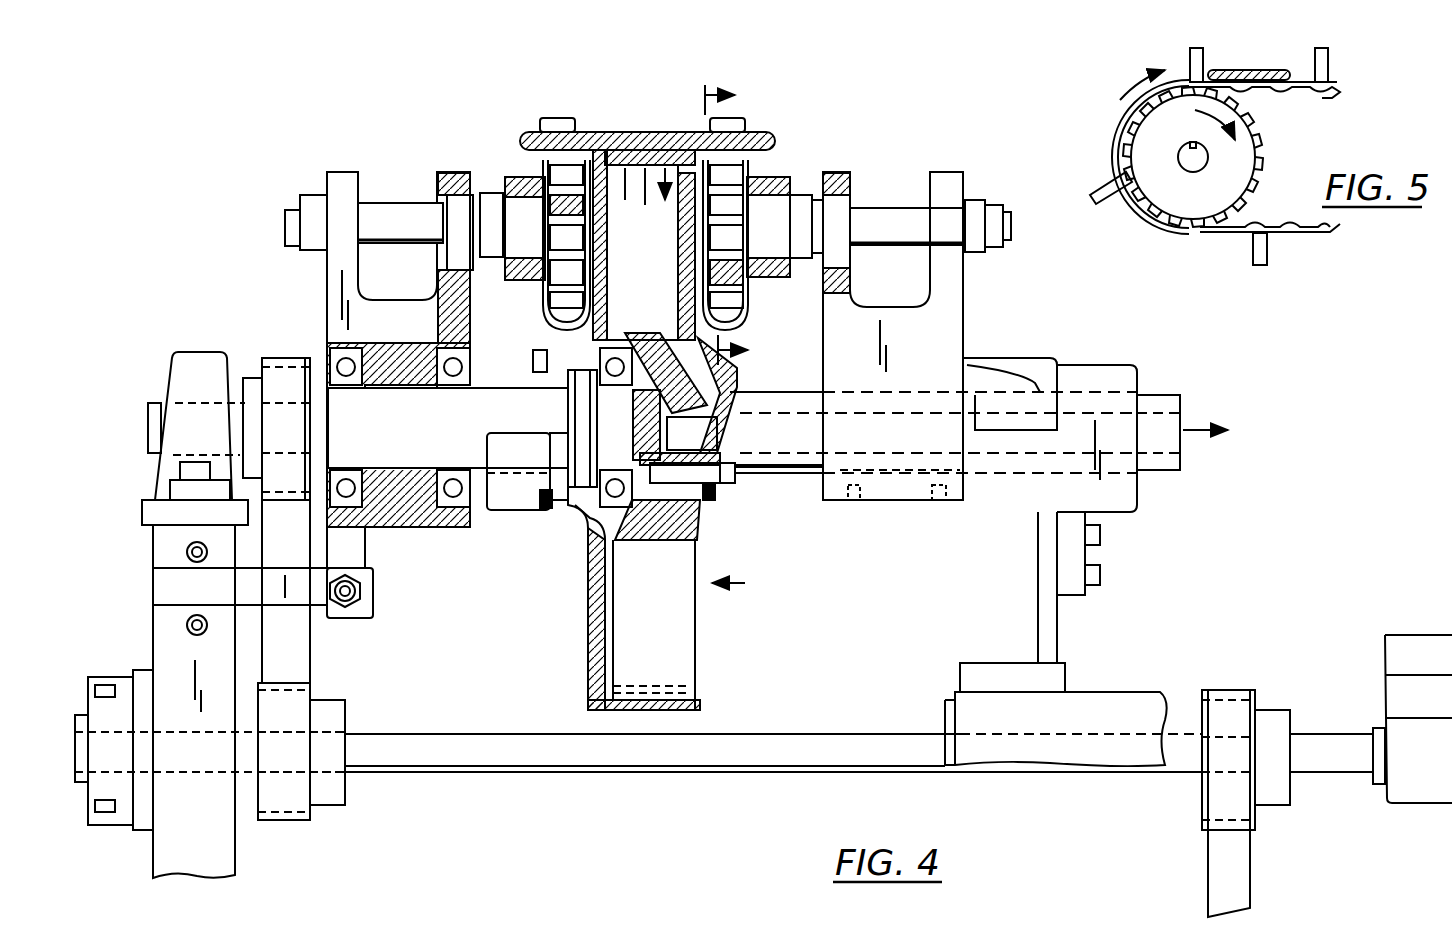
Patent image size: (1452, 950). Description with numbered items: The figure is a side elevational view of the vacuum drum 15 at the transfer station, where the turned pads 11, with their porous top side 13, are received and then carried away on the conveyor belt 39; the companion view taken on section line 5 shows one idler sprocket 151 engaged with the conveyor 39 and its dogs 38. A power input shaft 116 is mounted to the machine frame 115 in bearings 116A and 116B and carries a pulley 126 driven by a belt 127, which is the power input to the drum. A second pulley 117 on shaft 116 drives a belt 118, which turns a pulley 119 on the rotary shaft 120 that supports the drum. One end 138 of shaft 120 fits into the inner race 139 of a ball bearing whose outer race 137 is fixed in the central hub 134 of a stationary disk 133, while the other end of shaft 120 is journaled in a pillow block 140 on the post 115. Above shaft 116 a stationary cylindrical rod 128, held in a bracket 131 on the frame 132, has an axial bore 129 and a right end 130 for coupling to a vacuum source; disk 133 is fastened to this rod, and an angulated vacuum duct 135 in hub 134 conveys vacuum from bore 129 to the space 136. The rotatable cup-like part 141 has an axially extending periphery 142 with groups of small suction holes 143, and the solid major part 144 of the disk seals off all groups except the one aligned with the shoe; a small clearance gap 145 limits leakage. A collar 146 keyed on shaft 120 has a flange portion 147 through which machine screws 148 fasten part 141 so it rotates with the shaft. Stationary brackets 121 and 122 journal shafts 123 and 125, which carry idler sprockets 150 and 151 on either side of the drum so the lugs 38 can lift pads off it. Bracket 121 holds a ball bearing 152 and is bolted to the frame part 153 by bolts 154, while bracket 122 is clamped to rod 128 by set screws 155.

In FIG. 4, the section line 5 is at (733, 213).
In FIG. 4, the pad 11 is at (583, 152).
In FIG. 5, the pad 11 is at (1260, 42).
In FIG. 4, the top side of the pad 13 is at (615, 152).
In FIG. 4, the vacuum drum 15 is at (749, 583).
In FIG. 4, the dogs 38 is at (555, 118).
In FIG. 5, the dogs 38 is at (1190, 52).
In FIG. 4, the conveyor belt 39 is at (545, 150).
In FIG. 5, the conveyor belt 39 is at (1330, 95).
In FIG. 4, the machine frame 115 is at (165, 655).
In FIG. 4, the shaft 116 is at (497, 735).
In FIG. 4, the bearing 116A is at (120, 805).
In FIG. 4, the bearing 116B is at (1430, 800).
In FIG. 4, the pulley 117 is at (312, 690).
In FIG. 4, the belt 118 is at (312, 640).
In FIG. 4, the pulley 119 is at (275, 358).
In FIG. 4, the shaft 120 is at (150, 403).
In FIG. 4, the bracket 121 is at (327, 285).
In FIG. 4, the bracket 122 is at (963, 300).
In FIG. 4, the shaft 123 is at (285, 220).
In FIG. 4, the shaft 125 is at (1005, 235).
In FIG. 5, the shaft 125 is at (1195, 172).
In FIG. 4, the pulley 126 is at (1258, 692).
In FIG. 4, the belt 127 is at (1252, 863).
In FIG. 4, the stationary cylindrical rod 128 is at (760, 478).
In FIG. 4, the axial bore 129 is at (748, 405).
In FIG. 4, the right end of rod 130 is at (1160, 400).
In FIG. 4, the bracket 131 is at (1130, 500).
In FIG. 4, the machine frame 132 is at (1155, 692).
In FIG. 4, the stationary disk 133 is at (678, 218).
In FIG. 4, the central hub 134 is at (740, 372).
In FIG. 4, the angulated vacuum duct 135 is at (668, 348).
In FIG. 4, the space 136 is at (665, 257).
In FIG. 4, the outer race 137 is at (697, 530).
In FIG. 4, the end of shaft 138 is at (600, 485).
In FIG. 4, the inner race 139 is at (705, 500).
In FIG. 4, the pillow block 140 is at (185, 352).
In FIG. 4, the rotatable part 141 is at (588, 660).
In FIG. 4, the periphery 142 is at (700, 705).
In FIG. 4, the suction holes 143 is at (642, 150).
In FIG. 4, the major part of the stationary disk 144 is at (697, 638).
In FIG. 4, the clearance gap 145 is at (697, 157).
In FIG. 4, the collar 146 is at (533, 355).
In FIG. 4, the flange portion 147 is at (555, 330).
In FIG. 4, the machine screws 148 is at (540, 503).
In FIG. 4, the idler sprocket 150 is at (540, 168).
In FIG. 4, the idler sprocket 151 is at (745, 272).
In FIG. 5, the idler sprocket 151 is at (1258, 142).
In FIG. 4, the ball bearing 152 is at (380, 512).
In FIG. 4, the part of the machine frame 153 is at (165, 582).
In FIG. 4, the bolts 154 is at (373, 593).
In FIG. 4, the set screws 155 is at (940, 500).